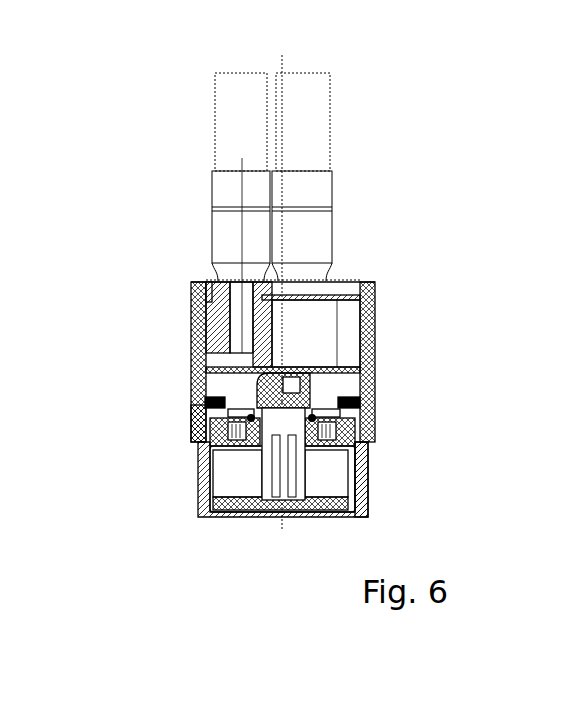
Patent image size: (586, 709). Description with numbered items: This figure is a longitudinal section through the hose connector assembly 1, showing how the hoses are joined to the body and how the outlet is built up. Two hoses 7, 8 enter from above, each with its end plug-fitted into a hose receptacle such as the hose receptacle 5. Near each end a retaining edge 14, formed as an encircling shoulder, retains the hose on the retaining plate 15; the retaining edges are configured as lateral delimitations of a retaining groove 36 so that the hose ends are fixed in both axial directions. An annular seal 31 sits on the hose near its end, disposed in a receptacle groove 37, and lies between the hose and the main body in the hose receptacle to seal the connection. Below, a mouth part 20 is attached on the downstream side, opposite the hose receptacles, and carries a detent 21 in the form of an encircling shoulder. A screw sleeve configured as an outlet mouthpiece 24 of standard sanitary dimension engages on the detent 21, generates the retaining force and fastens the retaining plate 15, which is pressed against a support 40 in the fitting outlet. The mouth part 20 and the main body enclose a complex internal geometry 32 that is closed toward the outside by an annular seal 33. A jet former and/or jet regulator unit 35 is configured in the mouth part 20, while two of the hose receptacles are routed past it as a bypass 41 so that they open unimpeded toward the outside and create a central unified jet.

The hose connector assembly 1 is at (413, 298).
The hose receptacle 5 is at (241, 314).
The hose 7 is at (300, 148).
The hose 8 is at (233, 112).
The retaining edge 14 is at (203, 289).
The retaining plate 15 is at (338, 290).
The mouth part 20 is at (193, 473).
The detent 21 is at (193, 417).
The outlet mouthpiece 24 is at (371, 476).
The annular seal 31 is at (218, 326).
The internal geometry 32 is at (324, 401).
The annular seal 33 is at (203, 403).
The jet former and/or jet regulator unit 35 is at (224, 438).
The retaining groove 36 is at (204, 300).
The receptacle groove 37 is at (266, 326).
The support 40 is at (360, 288).
The bypass 41 is at (287, 463).